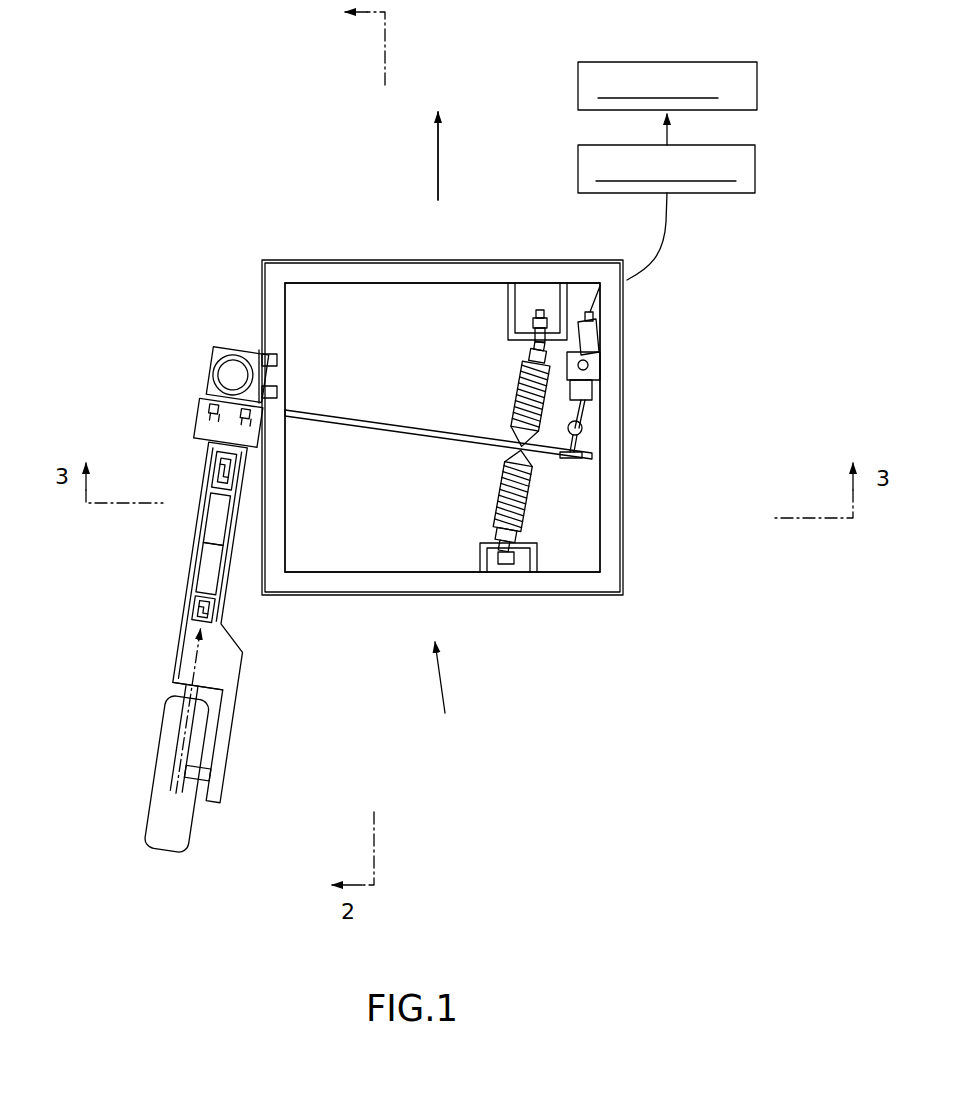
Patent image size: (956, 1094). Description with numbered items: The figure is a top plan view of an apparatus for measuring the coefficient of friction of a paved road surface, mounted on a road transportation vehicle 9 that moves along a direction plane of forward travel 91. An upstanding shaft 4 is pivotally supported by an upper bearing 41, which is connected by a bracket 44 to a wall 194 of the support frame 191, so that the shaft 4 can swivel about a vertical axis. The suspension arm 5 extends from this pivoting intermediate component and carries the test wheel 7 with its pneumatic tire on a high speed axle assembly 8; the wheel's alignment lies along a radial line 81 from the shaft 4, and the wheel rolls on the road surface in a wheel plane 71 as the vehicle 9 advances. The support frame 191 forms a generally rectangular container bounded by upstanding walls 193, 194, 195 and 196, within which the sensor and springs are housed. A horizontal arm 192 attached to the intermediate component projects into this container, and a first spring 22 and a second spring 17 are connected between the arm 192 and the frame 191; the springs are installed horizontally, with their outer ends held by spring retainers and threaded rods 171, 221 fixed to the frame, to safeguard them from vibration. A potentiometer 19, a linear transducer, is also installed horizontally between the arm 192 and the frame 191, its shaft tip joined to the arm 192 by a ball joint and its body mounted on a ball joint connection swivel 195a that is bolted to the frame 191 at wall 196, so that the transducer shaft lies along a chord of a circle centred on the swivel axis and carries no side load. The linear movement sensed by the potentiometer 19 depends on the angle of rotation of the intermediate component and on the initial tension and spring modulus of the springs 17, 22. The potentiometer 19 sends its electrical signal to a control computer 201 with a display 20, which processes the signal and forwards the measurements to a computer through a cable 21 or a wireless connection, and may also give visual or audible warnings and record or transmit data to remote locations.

The shaft 4 is at (230, 375).
The upper bearing 41 is at (218, 402).
The bracket 44 is at (268, 377).
The suspension arm 5 is at (187, 623).
The wheel plane 71 is at (187, 648).
The radial line 81 is at (177, 667).
The high speed axle assembly 8 is at (225, 777).
The test wheel 7 is at (180, 832).
The road transportation vehicle 9 is at (446, 691).
The direction plane of forward travel 91 is at (437, 130).
The threaded rod 171 is at (477, 156).
The second spring 17 is at (520, 398).
The first spring 22 is at (530, 500).
The threaded rod 221 is at (518, 340).
The potentiometer 19 is at (593, 335).
The support frame 191 is at (398, 276).
The arm 192 is at (338, 418).
The upstanding wall 193 is at (320, 270).
The upstanding wall 194 is at (268, 296).
The upstanding wall 195 is at (610, 500).
The ball joint connection swivel 195a is at (588, 365).
The upstanding wall 196 is at (303, 580).
The display 20 is at (584, 77).
The control computer 201 is at (584, 153).
The cable 21 is at (663, 243).